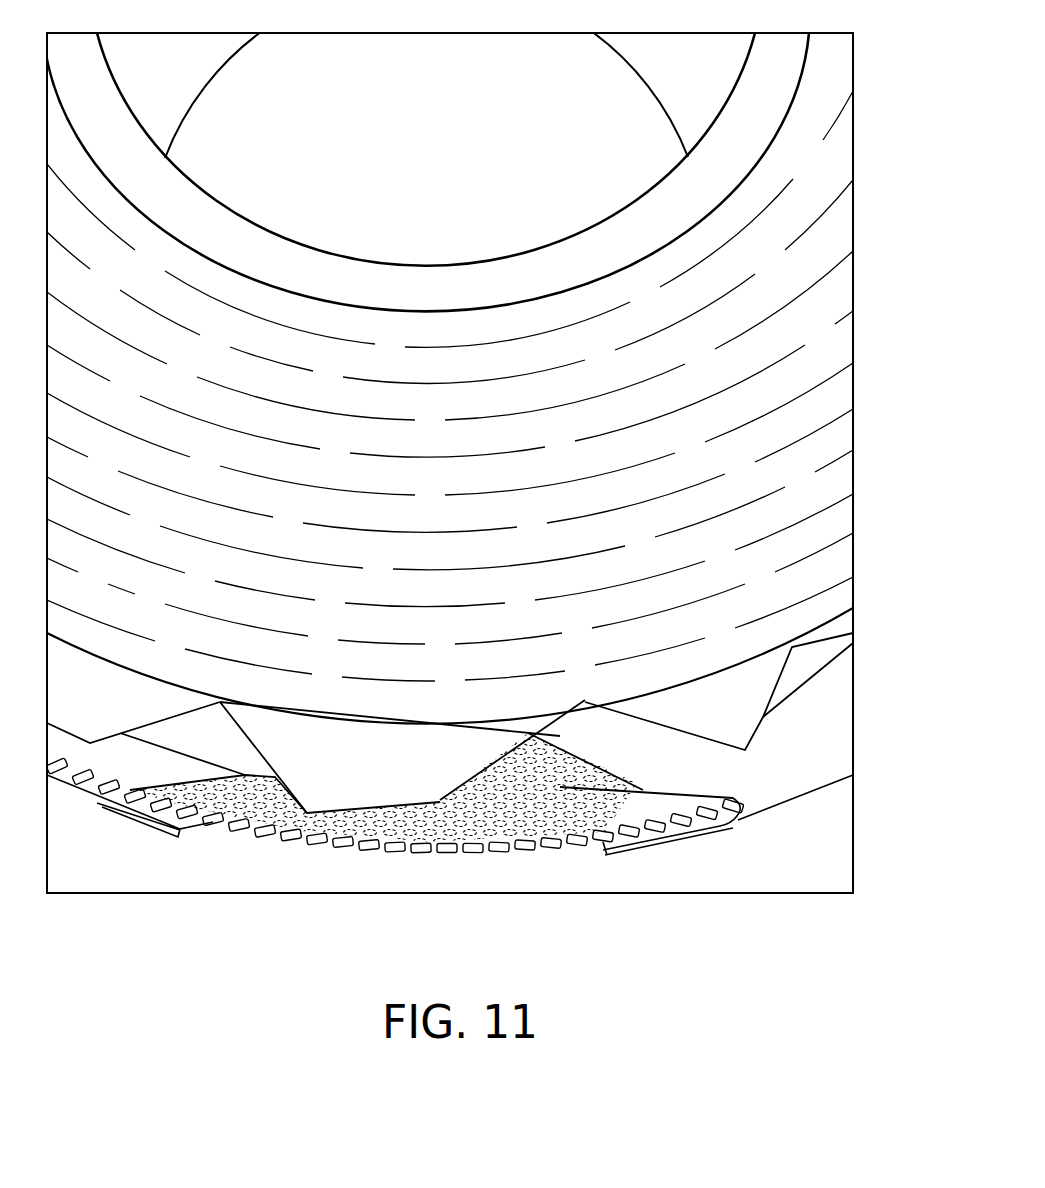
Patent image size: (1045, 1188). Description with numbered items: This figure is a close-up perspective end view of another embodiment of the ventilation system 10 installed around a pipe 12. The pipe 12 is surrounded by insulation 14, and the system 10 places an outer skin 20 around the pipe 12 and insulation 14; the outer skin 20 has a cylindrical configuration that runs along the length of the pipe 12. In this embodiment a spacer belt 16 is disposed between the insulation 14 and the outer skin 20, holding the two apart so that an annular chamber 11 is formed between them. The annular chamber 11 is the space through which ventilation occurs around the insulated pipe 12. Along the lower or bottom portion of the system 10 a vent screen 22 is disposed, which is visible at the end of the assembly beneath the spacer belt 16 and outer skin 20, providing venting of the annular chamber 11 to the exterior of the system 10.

The ventilation system 10 is at (265, 910).
The annular chamber 11 is at (808, 758).
The pipe 12 is at (288, 260).
The insulation 14 is at (803, 460).
The spacer belt 16 is at (383, 788).
The outer skin 20 is at (818, 790).
The vent screen 22 is at (495, 853).